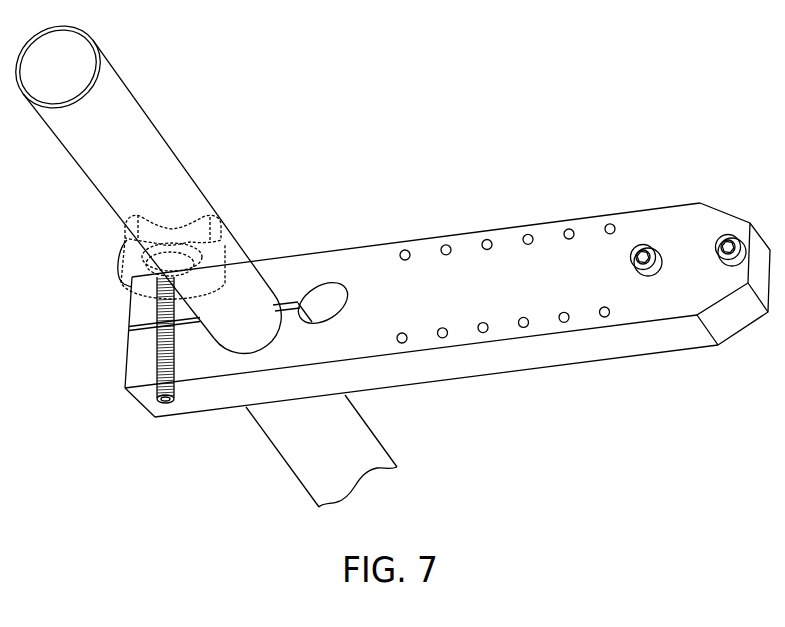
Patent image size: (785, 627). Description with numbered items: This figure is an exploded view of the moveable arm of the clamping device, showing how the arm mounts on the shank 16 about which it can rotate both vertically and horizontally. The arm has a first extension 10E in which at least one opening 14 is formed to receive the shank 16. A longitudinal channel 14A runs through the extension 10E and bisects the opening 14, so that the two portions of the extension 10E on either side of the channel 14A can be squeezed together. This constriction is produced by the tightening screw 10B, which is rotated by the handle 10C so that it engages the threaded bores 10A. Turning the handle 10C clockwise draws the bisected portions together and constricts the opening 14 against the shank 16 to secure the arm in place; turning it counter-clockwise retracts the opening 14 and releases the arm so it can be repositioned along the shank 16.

The shank 16 is at (173, 153).
The first extension 10E is at (507, 227).
The handle 10C is at (128, 262).
The longitudinal channel 14A is at (105, 328).
The tightening screw 10B is at (162, 358).
The threaded bores 10A is at (162, 404).
The opening 14 is at (203, 355).